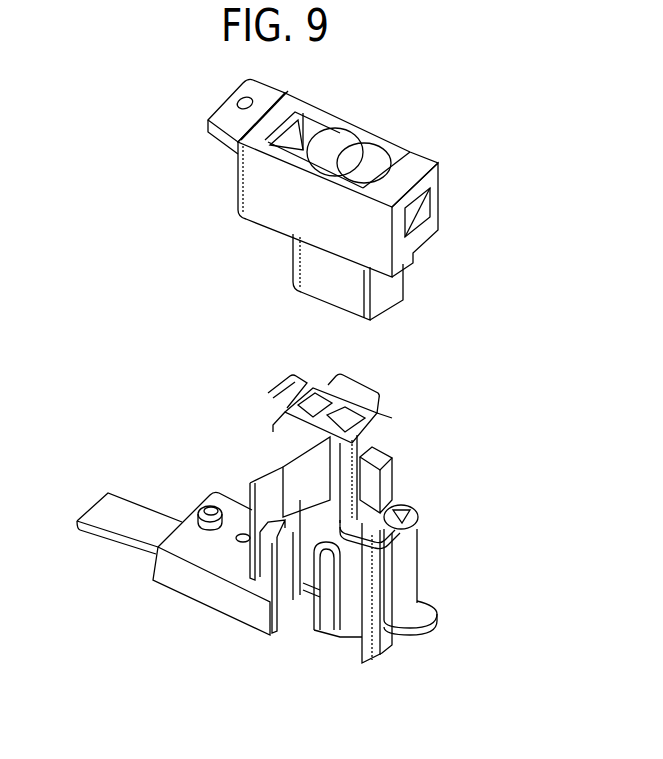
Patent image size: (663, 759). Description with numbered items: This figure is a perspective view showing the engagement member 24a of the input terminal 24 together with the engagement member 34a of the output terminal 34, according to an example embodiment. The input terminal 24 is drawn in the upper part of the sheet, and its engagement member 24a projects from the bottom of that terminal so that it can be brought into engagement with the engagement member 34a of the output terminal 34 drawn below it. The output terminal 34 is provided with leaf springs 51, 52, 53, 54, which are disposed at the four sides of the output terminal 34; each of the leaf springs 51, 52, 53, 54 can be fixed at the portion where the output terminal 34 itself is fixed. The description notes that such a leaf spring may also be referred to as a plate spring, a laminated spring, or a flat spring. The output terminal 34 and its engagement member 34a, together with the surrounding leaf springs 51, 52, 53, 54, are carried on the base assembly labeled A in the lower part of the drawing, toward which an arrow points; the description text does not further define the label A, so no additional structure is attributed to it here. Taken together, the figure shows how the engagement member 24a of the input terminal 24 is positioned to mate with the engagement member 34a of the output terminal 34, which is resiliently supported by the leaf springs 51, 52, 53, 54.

The input terminal 24 is at (405, 300).
The engagement member of the input terminal 24a is at (318, 279).
The connector assembly A is at (240, 633).
The output terminal 34 is at (345, 481).
The engagement member of the output terminal 34a is at (377, 415).
The leaf spring 51 is at (383, 474).
The leaf spring 52 is at (280, 382).
The leaf spring 53 is at (290, 471).
The leaf spring 54 is at (360, 382).